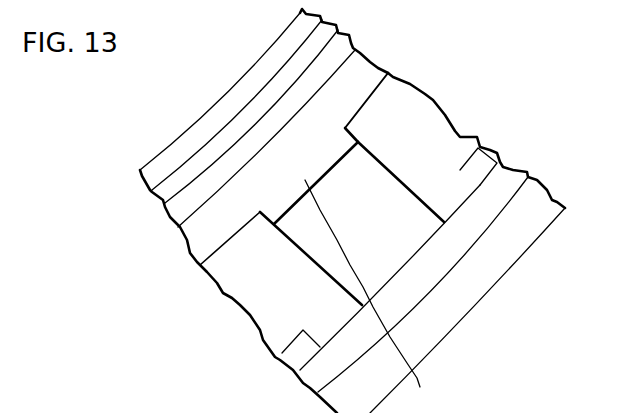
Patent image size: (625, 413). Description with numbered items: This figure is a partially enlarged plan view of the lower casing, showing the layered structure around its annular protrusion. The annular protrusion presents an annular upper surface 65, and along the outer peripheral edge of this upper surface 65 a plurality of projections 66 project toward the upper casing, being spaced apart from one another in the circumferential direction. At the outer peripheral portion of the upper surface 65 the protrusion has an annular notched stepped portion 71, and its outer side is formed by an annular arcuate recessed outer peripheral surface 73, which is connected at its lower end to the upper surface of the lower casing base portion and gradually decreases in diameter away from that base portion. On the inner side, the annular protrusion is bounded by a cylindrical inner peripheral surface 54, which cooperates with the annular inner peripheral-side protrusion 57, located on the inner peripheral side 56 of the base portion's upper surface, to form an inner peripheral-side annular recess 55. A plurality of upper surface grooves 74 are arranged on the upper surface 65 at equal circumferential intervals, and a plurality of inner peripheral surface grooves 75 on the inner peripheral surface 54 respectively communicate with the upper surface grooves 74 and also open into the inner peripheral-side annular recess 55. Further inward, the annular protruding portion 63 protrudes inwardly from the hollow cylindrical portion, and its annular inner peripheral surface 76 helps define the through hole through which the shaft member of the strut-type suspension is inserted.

The cylindrical inner peripheral surface 54 is at (214, 245).
The inner peripheral-side annular recess 55 is at (217, 207).
The inner peripheral side 56 is at (250, 118).
The annular inner peripheral-side protrusion 57 is at (275, 42).
The annular protruding portion 63 is at (207, 128).
The annular upper surface 65 is at (437, 117).
The projections 66 is at (483, 163).
The annular notched stepped portion 71 is at (433, 265).
The annular arcuate recessed outer peripheral surface 73 is at (497, 263).
The upper surface grooves 74 is at (373, 270).
The inner peripheral surface grooves 75 is at (374, 296).
The annular inner peripheral surface 76 is at (255, 63).